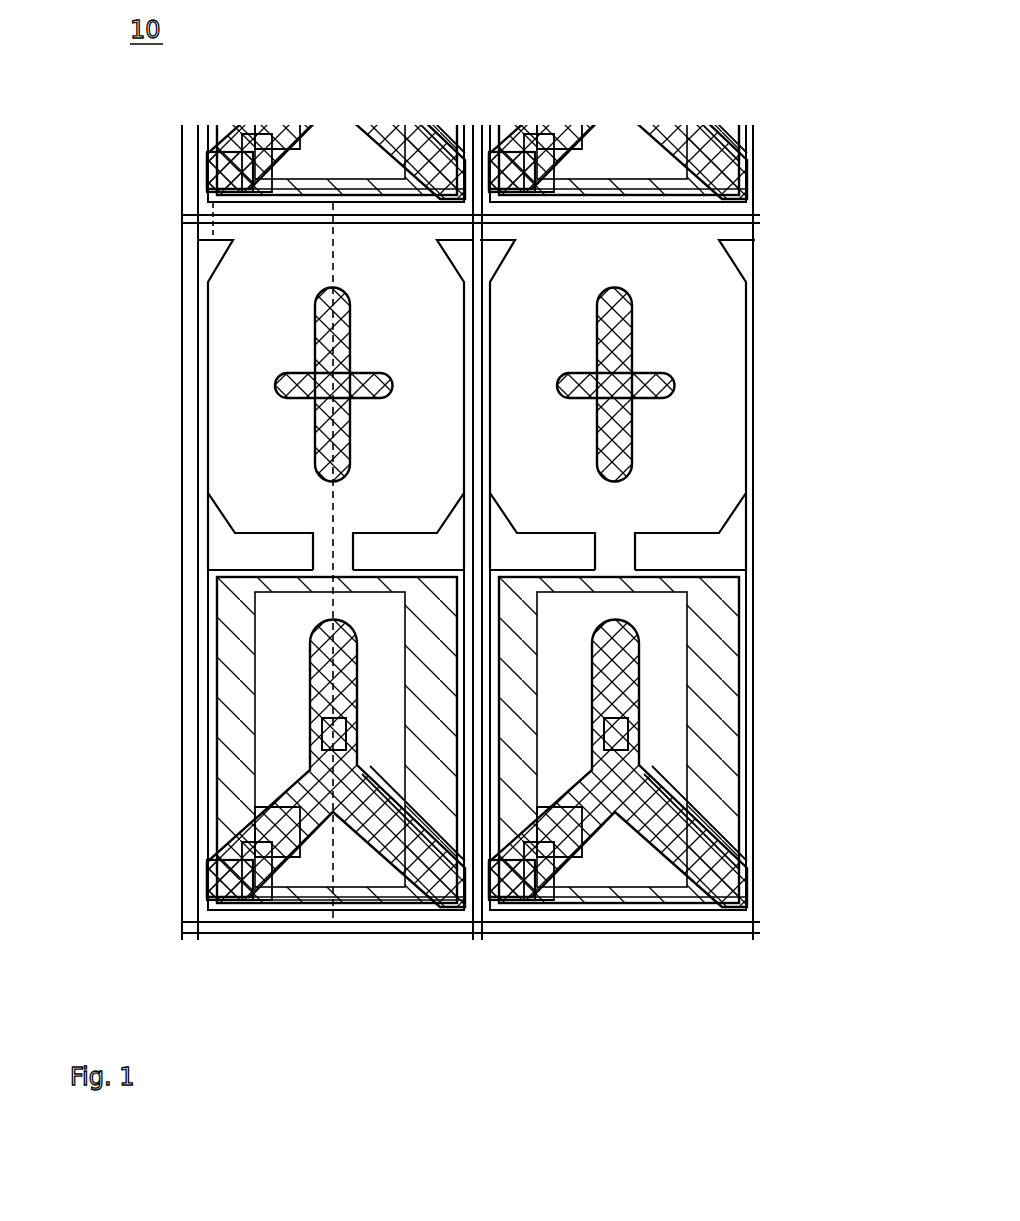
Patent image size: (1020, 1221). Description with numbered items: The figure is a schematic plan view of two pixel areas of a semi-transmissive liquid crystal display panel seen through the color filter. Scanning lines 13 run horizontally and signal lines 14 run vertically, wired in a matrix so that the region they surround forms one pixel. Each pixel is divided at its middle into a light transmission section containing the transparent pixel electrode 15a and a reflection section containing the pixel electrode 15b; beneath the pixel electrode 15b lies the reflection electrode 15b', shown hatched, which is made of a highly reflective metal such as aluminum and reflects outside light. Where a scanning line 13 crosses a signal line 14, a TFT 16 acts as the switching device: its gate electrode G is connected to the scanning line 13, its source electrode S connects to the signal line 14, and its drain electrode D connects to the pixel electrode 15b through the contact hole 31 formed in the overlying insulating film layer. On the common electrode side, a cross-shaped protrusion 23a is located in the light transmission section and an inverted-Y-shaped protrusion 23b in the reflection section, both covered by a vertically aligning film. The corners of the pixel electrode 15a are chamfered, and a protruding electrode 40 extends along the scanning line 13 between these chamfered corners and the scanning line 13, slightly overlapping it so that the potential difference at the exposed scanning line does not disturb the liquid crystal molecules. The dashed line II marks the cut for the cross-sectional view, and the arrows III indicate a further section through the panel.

The scanning line 13 is at (185, 930).
The signal line 14 is at (472, 935).
The pixel electrode 15a is at (210, 510).
The pixel electrode 15b is at (279, 740).
The reflection electrode 15b' is at (245, 733).
The TFT 16 is at (268, 900).
The cross-shaped protrusion 23a is at (275, 385).
The inverted letter Y shaped protrusion 23b is at (265, 812).
The contact hole 31 is at (640, 725).
The protruding electrode 40 is at (210, 217).
The source electrode S is at (215, 870).
The gate electrode G is at (250, 900).
The drain electrode D is at (345, 890).
The II-II line II is at (325, 203).
The III-III line III is at (212, 212).